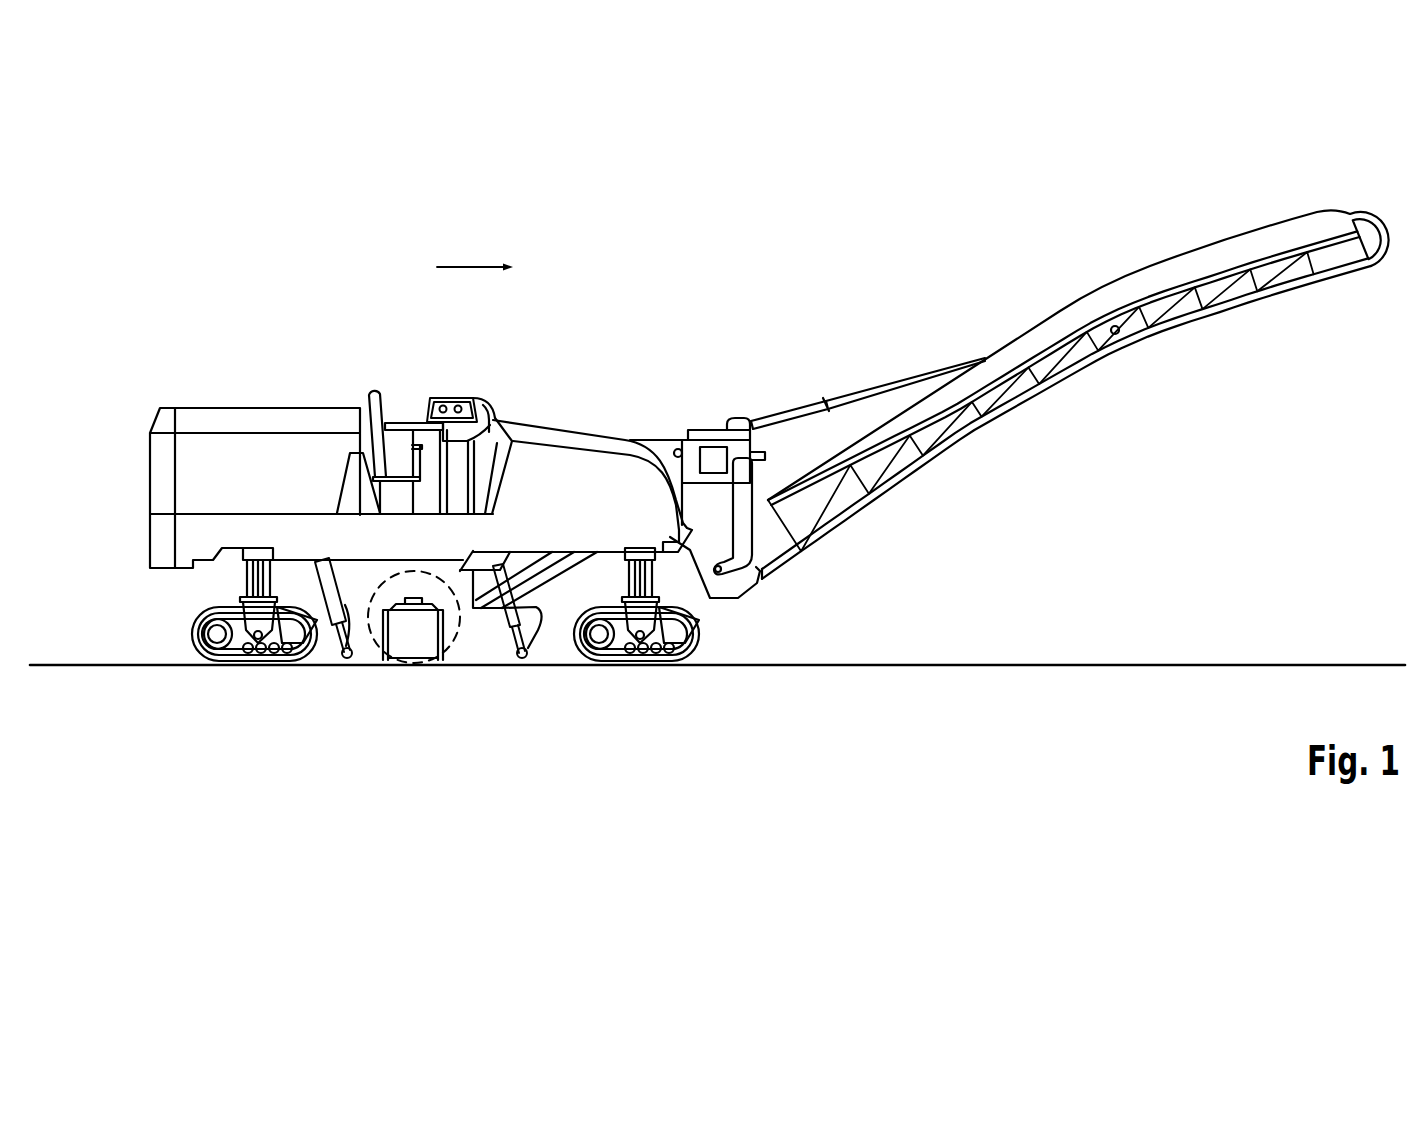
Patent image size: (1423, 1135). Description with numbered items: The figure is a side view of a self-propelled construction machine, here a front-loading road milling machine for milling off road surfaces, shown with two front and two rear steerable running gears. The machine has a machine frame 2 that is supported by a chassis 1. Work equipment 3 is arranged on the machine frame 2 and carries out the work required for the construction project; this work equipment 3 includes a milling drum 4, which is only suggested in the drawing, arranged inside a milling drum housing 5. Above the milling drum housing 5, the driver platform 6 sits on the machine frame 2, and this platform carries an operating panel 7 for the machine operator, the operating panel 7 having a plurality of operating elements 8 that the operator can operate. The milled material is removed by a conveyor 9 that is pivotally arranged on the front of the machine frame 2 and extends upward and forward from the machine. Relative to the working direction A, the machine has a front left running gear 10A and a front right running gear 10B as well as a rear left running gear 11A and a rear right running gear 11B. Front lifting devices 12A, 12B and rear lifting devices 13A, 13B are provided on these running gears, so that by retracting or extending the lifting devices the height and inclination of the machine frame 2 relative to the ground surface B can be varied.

The chassis 1 is at (162, 585).
The machine frame 2 is at (143, 462).
The work equipment 3 is at (370, 675).
The milling drum 4 is at (467, 640).
The milling drum housing 5 is at (309, 590).
The driver platform 6 is at (403, 380).
The operating panel 7 is at (494, 385).
The operating elements 8 is at (458, 406).
The conveyor 9 is at (1048, 300).
The front left running gear 10A is at (712, 635).
The front right running gear 10B is at (700, 640).
The rear left running gear 11A is at (179, 635).
The rear right running gear 11B is at (193, 637).
The front lifting device 12A is at (736, 595).
The front lifting device 12B is at (660, 578).
The rear lifting device 13A is at (179, 595).
The rear lifting device 13B is at (240, 578).
The working direction A is at (460, 263).
The ground surface B is at (1090, 664).